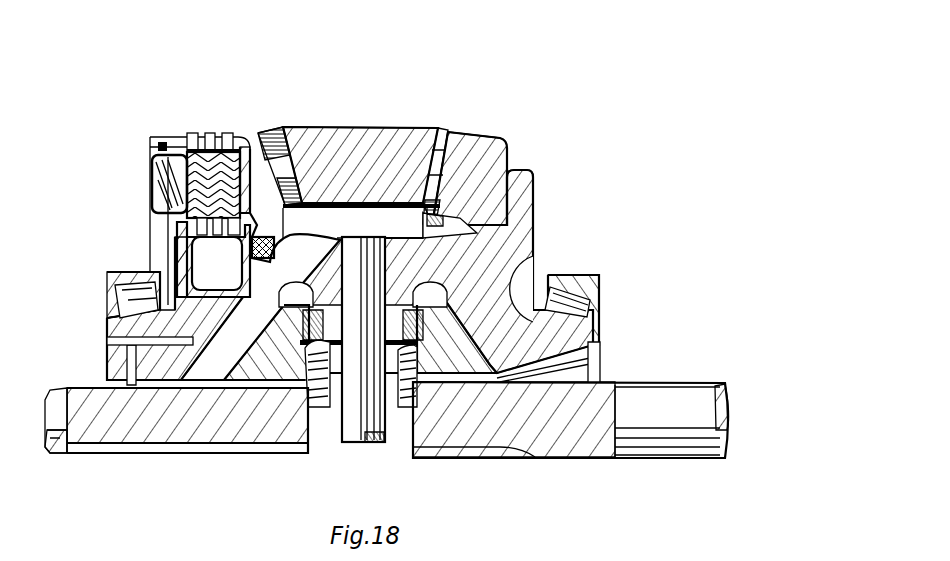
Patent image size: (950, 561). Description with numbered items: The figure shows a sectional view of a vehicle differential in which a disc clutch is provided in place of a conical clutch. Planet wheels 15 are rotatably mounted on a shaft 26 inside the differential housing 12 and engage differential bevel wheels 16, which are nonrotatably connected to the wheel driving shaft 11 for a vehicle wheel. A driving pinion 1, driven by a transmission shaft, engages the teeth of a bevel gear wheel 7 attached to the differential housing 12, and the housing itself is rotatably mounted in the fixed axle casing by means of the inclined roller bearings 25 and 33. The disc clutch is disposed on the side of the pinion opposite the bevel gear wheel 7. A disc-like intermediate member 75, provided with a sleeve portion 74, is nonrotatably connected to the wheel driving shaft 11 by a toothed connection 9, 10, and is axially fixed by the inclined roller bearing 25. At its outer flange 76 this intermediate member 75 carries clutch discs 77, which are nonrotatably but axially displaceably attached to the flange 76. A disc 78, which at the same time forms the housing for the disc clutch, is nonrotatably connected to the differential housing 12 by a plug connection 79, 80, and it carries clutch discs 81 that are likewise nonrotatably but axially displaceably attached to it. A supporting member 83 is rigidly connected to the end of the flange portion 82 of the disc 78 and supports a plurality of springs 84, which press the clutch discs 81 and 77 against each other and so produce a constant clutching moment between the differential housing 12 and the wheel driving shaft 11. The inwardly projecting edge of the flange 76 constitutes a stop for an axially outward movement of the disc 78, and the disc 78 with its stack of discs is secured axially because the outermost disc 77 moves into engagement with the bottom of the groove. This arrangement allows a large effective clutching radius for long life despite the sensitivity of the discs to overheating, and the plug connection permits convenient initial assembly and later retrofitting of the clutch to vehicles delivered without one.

The driving pinion 1 is at (376, 140).
The bevel gear wheel 7 is at (486, 160).
The toothed connection 9 is at (110, 370).
The toothed connection 10 is at (150, 447).
The wheel driving shaft 11 is at (103, 433).
The differential housing 12 is at (520, 181).
The planet wheel 15 is at (407, 263).
The differential bevel wheel 16 is at (408, 413).
The inclined roller bearing 25 is at (125, 300).
The shaft 26 is at (353, 430).
The inclined roller bearing 33 is at (590, 312).
The sleeve portion 74 is at (140, 338).
The intermediate member 75 is at (178, 255).
The outer flange 76 is at (180, 228).
The clutch discs 77 is at (218, 133).
The disc 78 is at (247, 145).
The plug connection 79 is at (268, 235).
The plug connection 80 is at (280, 242).
The clutch discs 81 is at (192, 133).
The flange portion 82 is at (157, 142).
The supporting member 83 is at (157, 200).
The springs 84 is at (157, 176).